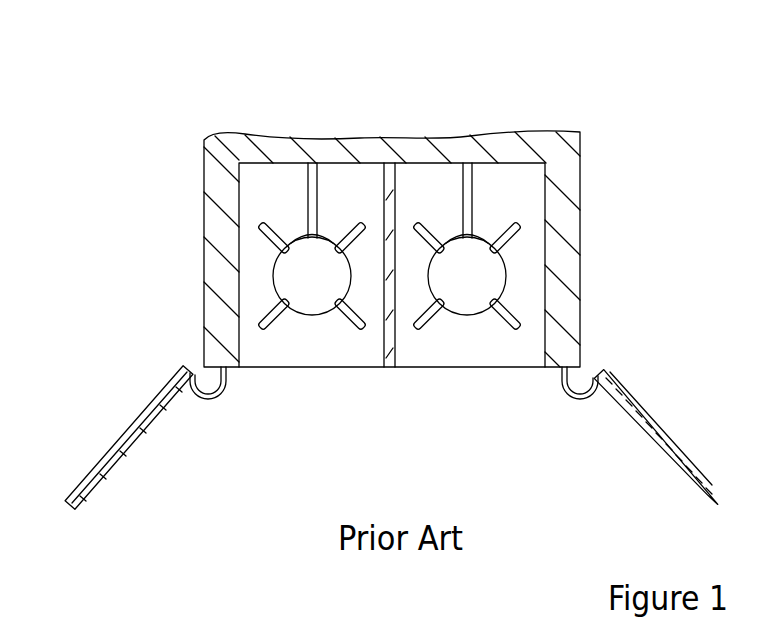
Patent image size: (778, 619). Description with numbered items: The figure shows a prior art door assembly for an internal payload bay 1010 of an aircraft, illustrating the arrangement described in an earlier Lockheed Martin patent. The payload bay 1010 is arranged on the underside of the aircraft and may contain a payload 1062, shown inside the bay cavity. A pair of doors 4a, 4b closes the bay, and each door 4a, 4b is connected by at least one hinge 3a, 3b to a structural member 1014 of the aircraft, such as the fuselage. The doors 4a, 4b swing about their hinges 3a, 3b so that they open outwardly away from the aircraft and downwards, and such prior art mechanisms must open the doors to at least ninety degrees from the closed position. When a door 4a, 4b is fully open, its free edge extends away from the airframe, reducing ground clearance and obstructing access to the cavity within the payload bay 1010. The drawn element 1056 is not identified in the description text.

The internal payload bay 1010 is at (156, 100).
The structural member 1014 is at (583, 233).
The valve stem 1056 is at (470, 190).
The payload 1062 is at (473, 313).
The hinge 3a is at (218, 390).
The hinge 3b is at (568, 387).
The door 4a is at (110, 478).
The door 4b is at (655, 450).